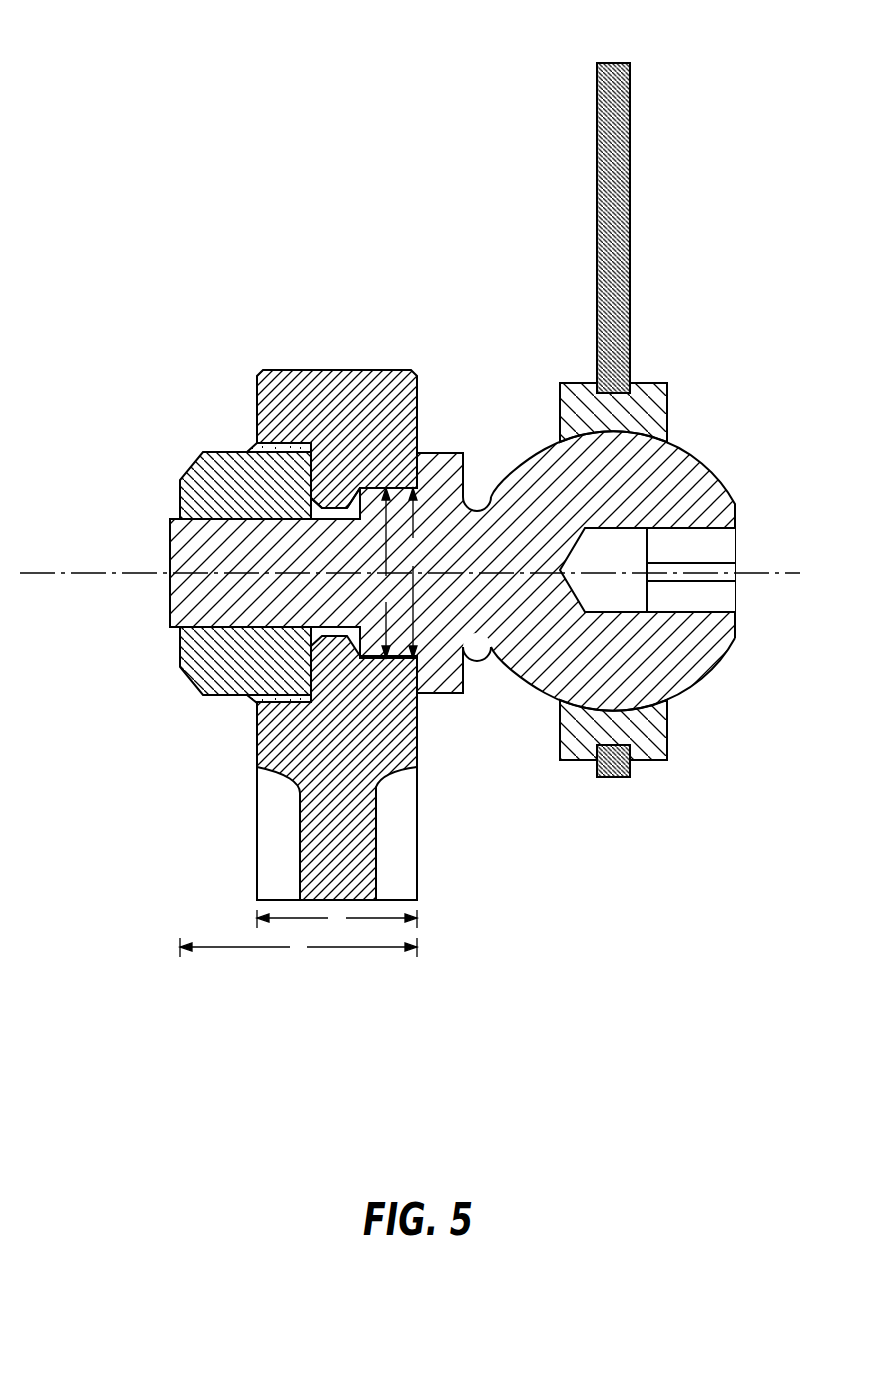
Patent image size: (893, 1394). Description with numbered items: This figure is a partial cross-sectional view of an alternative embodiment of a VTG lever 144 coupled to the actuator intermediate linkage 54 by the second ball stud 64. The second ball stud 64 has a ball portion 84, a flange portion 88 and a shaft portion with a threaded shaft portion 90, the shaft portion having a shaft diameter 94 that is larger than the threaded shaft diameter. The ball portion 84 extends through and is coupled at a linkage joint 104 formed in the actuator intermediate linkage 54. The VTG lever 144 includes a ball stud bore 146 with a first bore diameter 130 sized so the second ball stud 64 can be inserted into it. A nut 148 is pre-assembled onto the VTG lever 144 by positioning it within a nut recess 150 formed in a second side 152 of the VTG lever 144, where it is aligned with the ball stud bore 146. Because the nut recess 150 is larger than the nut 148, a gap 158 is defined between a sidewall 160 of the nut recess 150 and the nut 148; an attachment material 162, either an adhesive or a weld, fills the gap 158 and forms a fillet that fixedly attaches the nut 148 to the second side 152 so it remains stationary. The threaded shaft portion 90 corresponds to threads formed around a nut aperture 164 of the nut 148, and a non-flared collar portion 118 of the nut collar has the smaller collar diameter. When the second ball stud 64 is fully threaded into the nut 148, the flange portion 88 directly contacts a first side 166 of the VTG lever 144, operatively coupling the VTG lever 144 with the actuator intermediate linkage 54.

The actuator intermediate linkage 54 is at (612, 63).
The second ball stud 64 is at (708, 480).
The ball portion 84 is at (705, 664).
The flange portion 88 is at (451, 470).
The threaded shaft portion 90 is at (220, 546).
The shaft diameter 94 is at (384, 573).
The linkage joint 104 is at (668, 442).
The non-flared collar portion 118 is at (342, 505).
The first bore diameter 130 is at (413, 573).
The VTG lever 144 is at (268, 264).
The ball stud bore 146 is at (387, 486).
The nut 148 is at (193, 467).
The nut recess 150 is at (277, 730).
The second side 152 is at (257, 767).
The gap 158 is at (277, 432).
The sidewall 160 is at (327, 518).
The attachment material 162 is at (256, 442).
The nut aperture 164 is at (171, 628).
The first side 166 is at (389, 388).